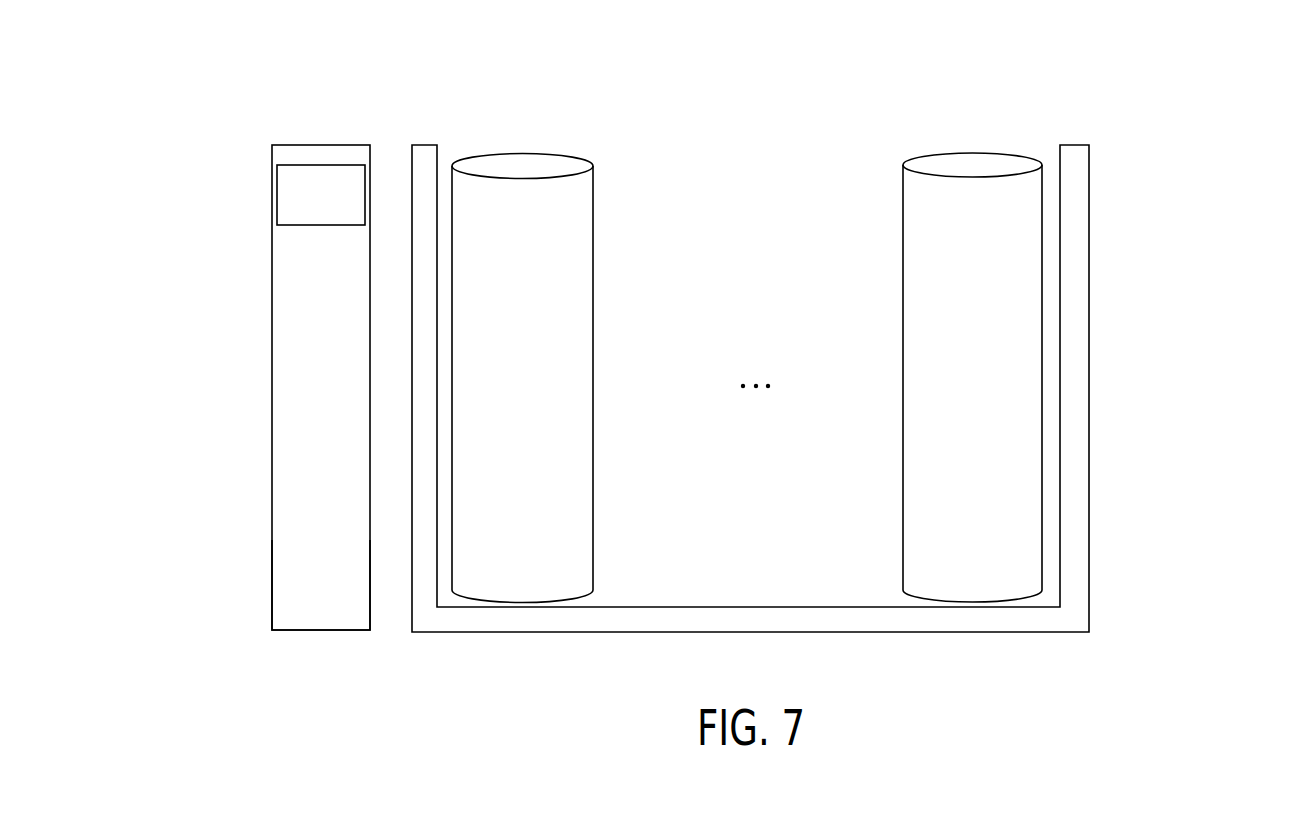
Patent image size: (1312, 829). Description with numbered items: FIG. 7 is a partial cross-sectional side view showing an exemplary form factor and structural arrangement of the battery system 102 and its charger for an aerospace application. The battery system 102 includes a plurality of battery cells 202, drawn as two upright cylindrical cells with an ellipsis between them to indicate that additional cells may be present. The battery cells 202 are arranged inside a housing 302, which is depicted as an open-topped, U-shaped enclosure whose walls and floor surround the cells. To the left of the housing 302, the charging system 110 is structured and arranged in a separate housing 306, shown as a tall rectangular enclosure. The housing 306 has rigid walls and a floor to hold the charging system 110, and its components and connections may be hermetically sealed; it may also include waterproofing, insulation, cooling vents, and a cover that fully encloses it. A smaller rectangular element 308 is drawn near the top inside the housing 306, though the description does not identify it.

The battery system 102 is at (1215, 143).
The charging system 110 is at (293, 267).
The battery cells 202 is at (747, 378).
The housing 302 is at (1078, 542).
The separate housing 306 is at (307, 548).
The module 308 is at (321, 195).